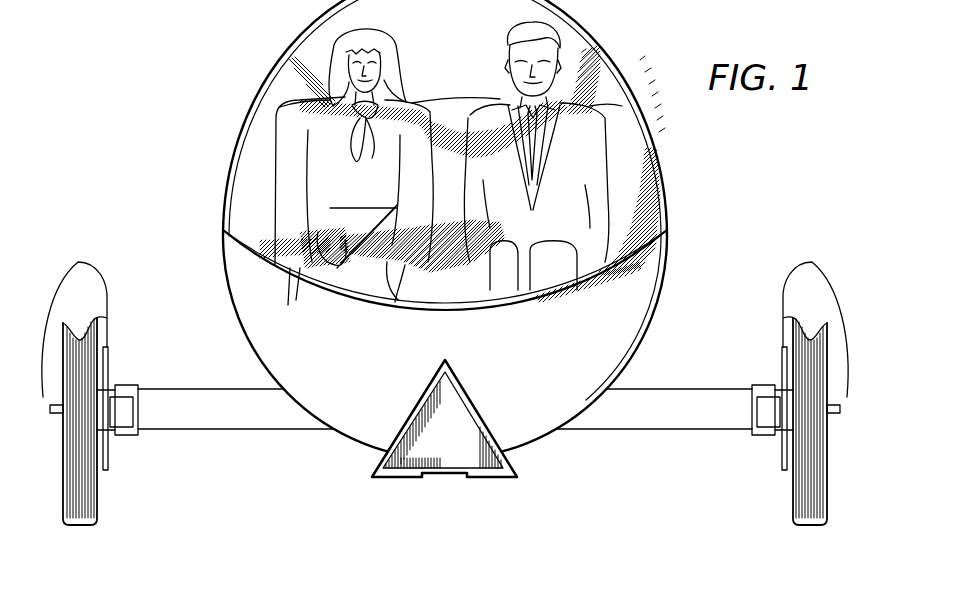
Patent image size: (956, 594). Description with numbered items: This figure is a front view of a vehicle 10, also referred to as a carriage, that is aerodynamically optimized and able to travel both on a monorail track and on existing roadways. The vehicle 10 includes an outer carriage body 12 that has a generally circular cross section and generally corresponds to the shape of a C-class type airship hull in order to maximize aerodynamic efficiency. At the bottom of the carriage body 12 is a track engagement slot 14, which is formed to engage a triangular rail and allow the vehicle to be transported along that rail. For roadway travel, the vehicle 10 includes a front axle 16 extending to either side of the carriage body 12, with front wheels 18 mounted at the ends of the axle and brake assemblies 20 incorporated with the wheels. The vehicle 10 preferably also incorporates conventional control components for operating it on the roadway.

The vehicle 10 is at (249, 56).
The outer carriage body 12 is at (642, 328).
The track engagement slot 14 is at (423, 477).
The front axle 16 is at (657, 429).
The front wheels 18 is at (98, 497).
The brake assemblies 20 is at (80, 262).